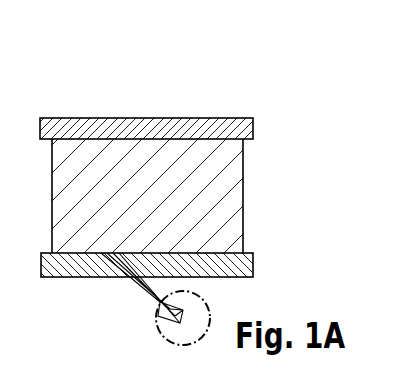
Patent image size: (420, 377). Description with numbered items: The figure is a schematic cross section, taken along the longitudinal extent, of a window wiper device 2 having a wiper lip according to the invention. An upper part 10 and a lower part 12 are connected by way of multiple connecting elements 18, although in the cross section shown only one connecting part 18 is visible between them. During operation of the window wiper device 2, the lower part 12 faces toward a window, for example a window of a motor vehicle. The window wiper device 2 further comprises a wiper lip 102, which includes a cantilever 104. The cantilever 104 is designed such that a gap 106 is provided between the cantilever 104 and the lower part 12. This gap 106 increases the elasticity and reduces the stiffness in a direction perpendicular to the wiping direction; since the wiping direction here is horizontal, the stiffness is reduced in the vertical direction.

The window wiper device 2 is at (125, 90).
The upper part 10 is at (225, 128).
The lower part 12 is at (253, 267).
The connecting element 18 is at (233, 193).
The wiper lip 102 is at (121, 317).
The cantilever 104 is at (150, 288).
The gap 106 is at (150, 286).